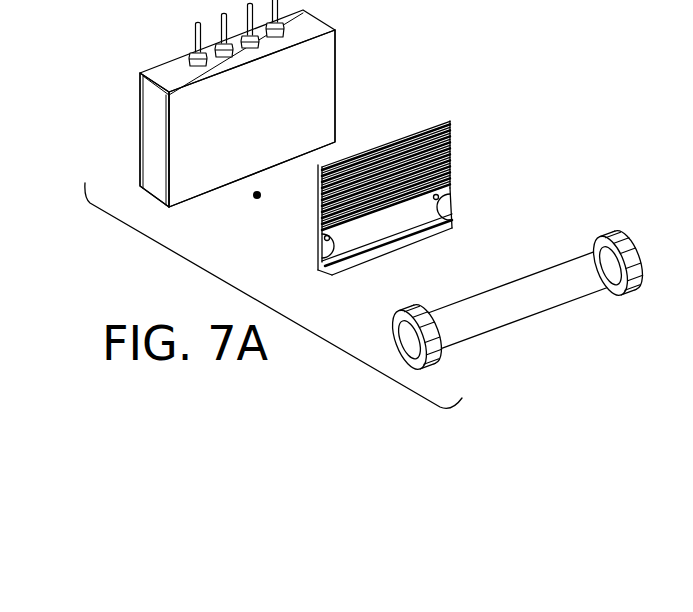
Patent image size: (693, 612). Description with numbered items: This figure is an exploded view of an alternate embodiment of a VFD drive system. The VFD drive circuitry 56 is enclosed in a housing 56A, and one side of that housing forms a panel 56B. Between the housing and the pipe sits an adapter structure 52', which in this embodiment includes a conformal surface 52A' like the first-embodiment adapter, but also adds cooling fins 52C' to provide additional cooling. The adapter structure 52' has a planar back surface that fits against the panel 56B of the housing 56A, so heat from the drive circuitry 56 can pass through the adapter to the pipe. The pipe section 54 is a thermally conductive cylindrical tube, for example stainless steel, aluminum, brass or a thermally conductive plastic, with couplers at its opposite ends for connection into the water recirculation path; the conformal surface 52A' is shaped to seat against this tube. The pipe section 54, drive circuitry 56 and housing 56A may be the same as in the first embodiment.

The VFD drive circuitry 56 is at (342, 63).
The housing 56A is at (152, 133).
The panel 56B is at (272, 131).
The adapter structure 52' is at (395, 185).
The cooling fins 52C' is at (439, 182).
The conformal surface 52A' is at (435, 227).
The pipe section 54 is at (498, 328).